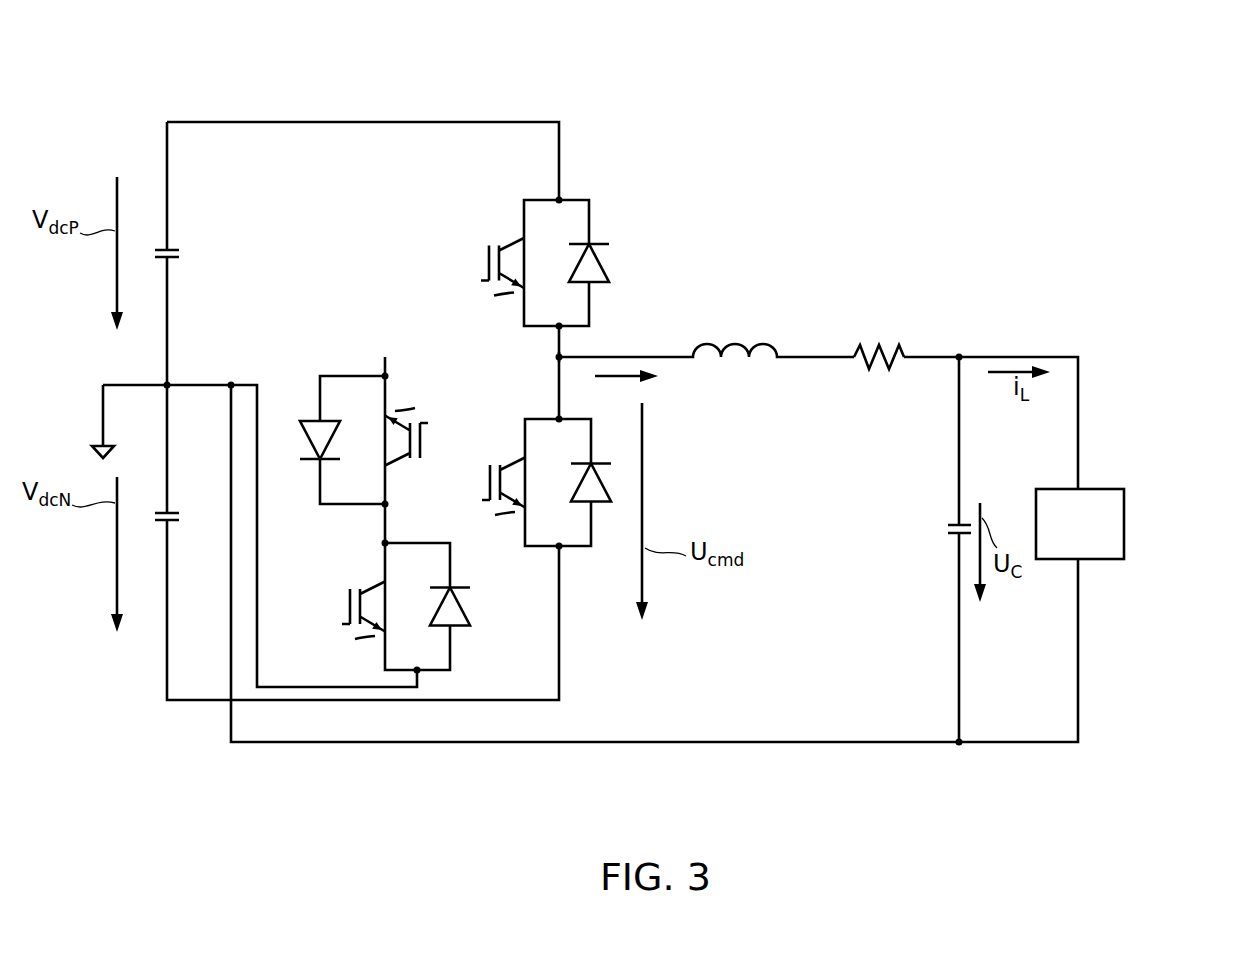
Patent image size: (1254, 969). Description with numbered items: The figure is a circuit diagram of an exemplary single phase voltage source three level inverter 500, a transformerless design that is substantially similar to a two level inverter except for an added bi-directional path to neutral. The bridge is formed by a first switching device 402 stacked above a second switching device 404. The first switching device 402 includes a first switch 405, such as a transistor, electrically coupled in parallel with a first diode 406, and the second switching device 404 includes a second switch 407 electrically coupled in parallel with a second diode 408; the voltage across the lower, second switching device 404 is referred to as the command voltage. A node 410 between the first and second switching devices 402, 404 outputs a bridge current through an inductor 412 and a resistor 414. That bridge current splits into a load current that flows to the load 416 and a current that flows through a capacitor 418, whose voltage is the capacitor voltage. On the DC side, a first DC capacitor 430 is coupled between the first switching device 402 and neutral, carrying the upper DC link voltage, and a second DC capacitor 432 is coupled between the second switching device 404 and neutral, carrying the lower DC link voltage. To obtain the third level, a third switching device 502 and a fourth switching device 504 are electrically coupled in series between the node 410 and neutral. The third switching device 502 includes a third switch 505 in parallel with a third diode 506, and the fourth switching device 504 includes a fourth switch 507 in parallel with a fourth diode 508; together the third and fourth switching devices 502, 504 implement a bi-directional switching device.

The single phase voltage source three level inverter 500 is at (1104, 113).
The first switching device 402 is at (597, 332).
The second switching device 404 is at (625, 418).
The first switch 405 is at (510, 240).
The first diode 406 is at (605, 262).
The second switch 407 is at (507, 462).
The second diode 408 is at (606, 482).
The node 410 is at (557, 356).
The inductor 412 is at (738, 346).
The resistor 414 is at (878, 346).
The load 416 is at (1126, 521).
The capacitor 418 is at (950, 524).
The first DC capacitor 430 is at (172, 247).
The second DC capacitor 432 is at (172, 510).
The third switching device 502 is at (355, 378).
The fourth switching device 504 is at (439, 613).
The third switch 505 is at (404, 457).
The third diode 506 is at (303, 440).
The fourth switch 507 is at (372, 585).
The fourth diode 508 is at (470, 605).